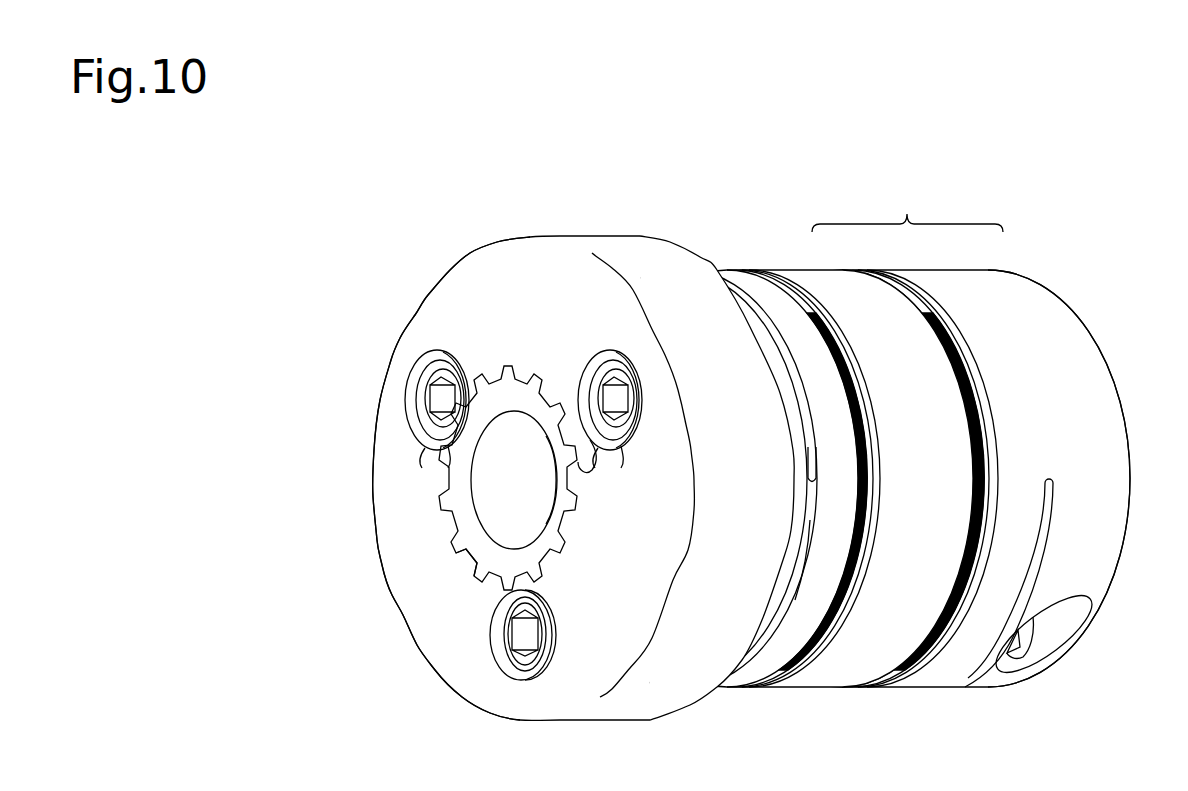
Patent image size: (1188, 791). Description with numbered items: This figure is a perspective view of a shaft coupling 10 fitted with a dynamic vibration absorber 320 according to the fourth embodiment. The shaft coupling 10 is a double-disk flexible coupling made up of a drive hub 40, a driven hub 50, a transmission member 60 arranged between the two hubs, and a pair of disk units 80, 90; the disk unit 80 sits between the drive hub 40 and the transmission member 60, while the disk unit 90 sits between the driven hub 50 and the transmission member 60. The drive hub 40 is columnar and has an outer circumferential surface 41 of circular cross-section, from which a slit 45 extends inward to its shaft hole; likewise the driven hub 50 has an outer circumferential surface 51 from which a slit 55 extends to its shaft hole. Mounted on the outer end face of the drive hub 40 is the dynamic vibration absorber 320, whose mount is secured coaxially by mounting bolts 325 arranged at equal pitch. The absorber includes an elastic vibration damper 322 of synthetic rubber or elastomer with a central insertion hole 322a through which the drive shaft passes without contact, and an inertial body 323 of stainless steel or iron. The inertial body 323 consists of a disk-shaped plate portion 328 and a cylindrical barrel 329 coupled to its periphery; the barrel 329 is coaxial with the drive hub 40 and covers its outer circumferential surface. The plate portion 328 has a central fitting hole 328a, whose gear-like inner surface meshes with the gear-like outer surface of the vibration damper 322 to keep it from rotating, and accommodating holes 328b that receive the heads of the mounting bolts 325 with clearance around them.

The shaft coupling 10 is at (907, 209).
The drive hub 40 is at (780, 303).
The outer circumferential surface 41 is at (817, 580).
The slit 45 is at (818, 452).
The driven hub 50 is at (990, 290).
The outer circumferential surface 51 is at (1037, 293).
The slit 55 is at (1050, 522).
The transmission member 60 is at (885, 315).
The disk unit 80 is at (840, 347).
The disk unit 90 is at (957, 353).
The dynamic vibration absorber 320 is at (618, 224).
The vibration damper 322 is at (467, 575).
The insertion hole 322a is at (464, 543).
The inertial body 323 is at (675, 262).
The mounting bolt 325 is at (455, 433).
The plate portion 328 is at (500, 272).
The fitting hole 328a is at (587, 450).
The accommodating hole 328b is at (428, 360).
The barrel 329 is at (733, 545).